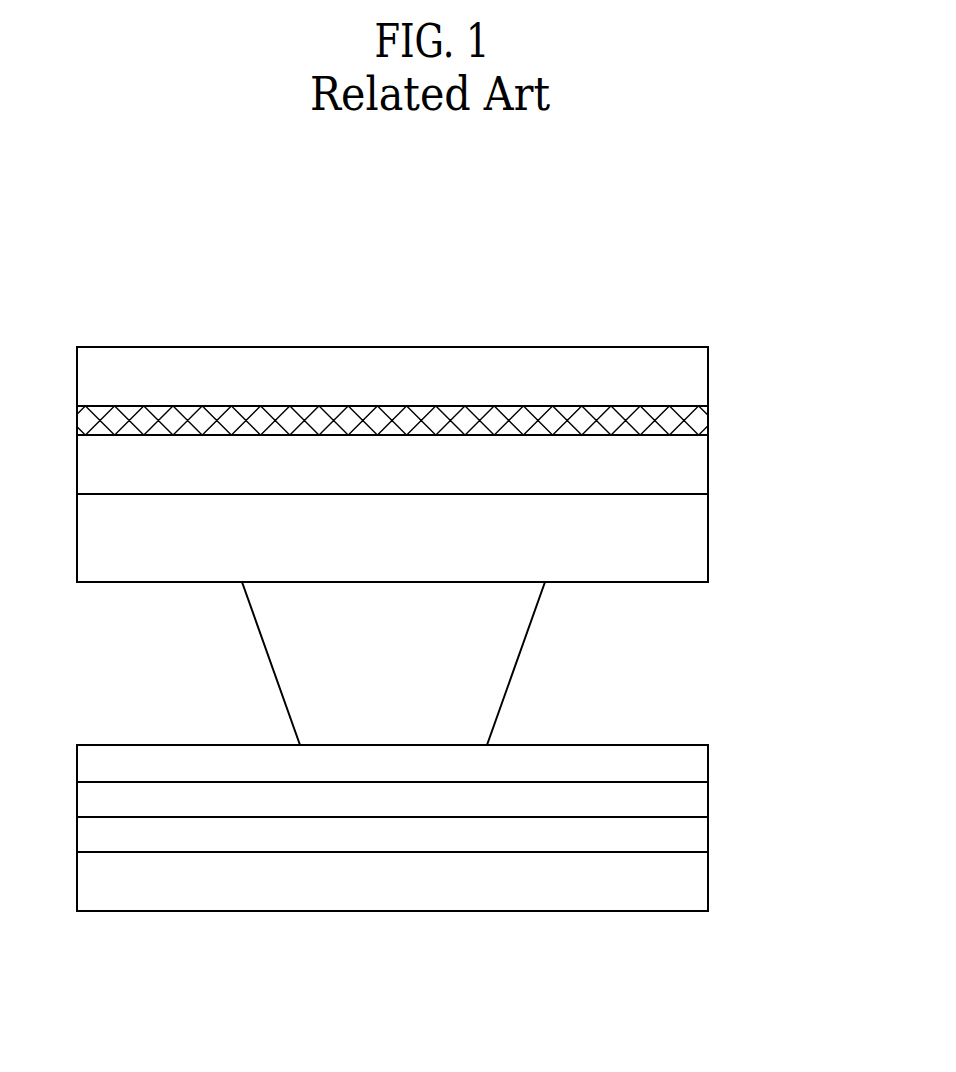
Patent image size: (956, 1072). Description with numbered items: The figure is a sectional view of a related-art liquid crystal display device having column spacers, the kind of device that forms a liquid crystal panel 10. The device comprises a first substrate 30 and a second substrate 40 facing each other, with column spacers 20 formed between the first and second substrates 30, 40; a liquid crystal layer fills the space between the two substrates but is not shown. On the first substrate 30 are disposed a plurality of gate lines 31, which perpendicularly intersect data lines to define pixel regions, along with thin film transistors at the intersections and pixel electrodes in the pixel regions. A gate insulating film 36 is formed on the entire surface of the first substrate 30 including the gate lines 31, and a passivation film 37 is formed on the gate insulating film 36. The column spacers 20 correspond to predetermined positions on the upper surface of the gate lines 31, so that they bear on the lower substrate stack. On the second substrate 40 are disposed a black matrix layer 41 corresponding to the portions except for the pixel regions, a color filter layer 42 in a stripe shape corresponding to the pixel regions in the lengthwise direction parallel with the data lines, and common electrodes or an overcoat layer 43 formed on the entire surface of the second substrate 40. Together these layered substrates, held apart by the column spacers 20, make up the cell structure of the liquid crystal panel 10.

The liquid crystal panel 10 is at (437, 551).
The column spacers 20 is at (503, 673).
The first substrate 30 is at (693, 887).
The gate lines 31 is at (693, 843).
The gate insulating film 36 is at (693, 803).
The passivation film 37 is at (693, 768).
The second substrate 40 is at (693, 386).
The black matrix layer 41 is at (693, 432).
The color filter layer 42 is at (693, 479).
The common electrodes or overcoat layer 43 is at (693, 551).